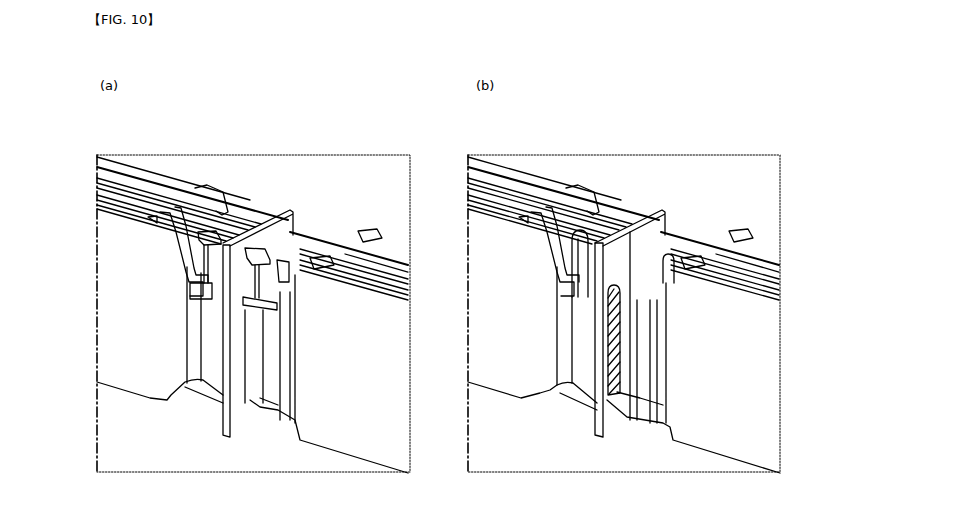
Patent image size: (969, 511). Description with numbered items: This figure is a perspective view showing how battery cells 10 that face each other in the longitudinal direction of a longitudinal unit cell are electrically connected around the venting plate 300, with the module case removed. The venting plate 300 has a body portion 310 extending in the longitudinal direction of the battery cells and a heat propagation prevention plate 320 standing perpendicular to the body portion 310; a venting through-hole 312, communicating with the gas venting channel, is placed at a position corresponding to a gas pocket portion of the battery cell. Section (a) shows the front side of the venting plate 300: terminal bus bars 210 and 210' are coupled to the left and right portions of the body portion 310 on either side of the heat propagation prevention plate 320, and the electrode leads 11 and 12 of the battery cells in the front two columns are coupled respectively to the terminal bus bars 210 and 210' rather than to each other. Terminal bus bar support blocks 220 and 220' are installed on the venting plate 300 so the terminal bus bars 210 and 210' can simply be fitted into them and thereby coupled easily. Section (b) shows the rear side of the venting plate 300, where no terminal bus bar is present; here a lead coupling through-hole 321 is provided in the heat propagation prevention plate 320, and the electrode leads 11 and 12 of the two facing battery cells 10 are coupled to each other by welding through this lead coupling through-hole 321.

The battery cell 10 is at (158, 172).
The electrode lead 11 is at (217, 368).
The electrode lead 12 is at (257, 387).
The terminal bus bar 210 is at (135, 265).
The terminal bus bar 210' is at (165, 334).
The terminal bus bar support block 220 is at (139, 240).
The terminal bus bar support block 220' is at (347, 196).
The venting plate 300 is at (335, 122).
The body portion 310 is at (309, 218).
The venting through-hole 312 is at (588, 225).
The heat propagation prevention plate 320 is at (264, 228).
The lead coupling through-hole 321 is at (630, 393).